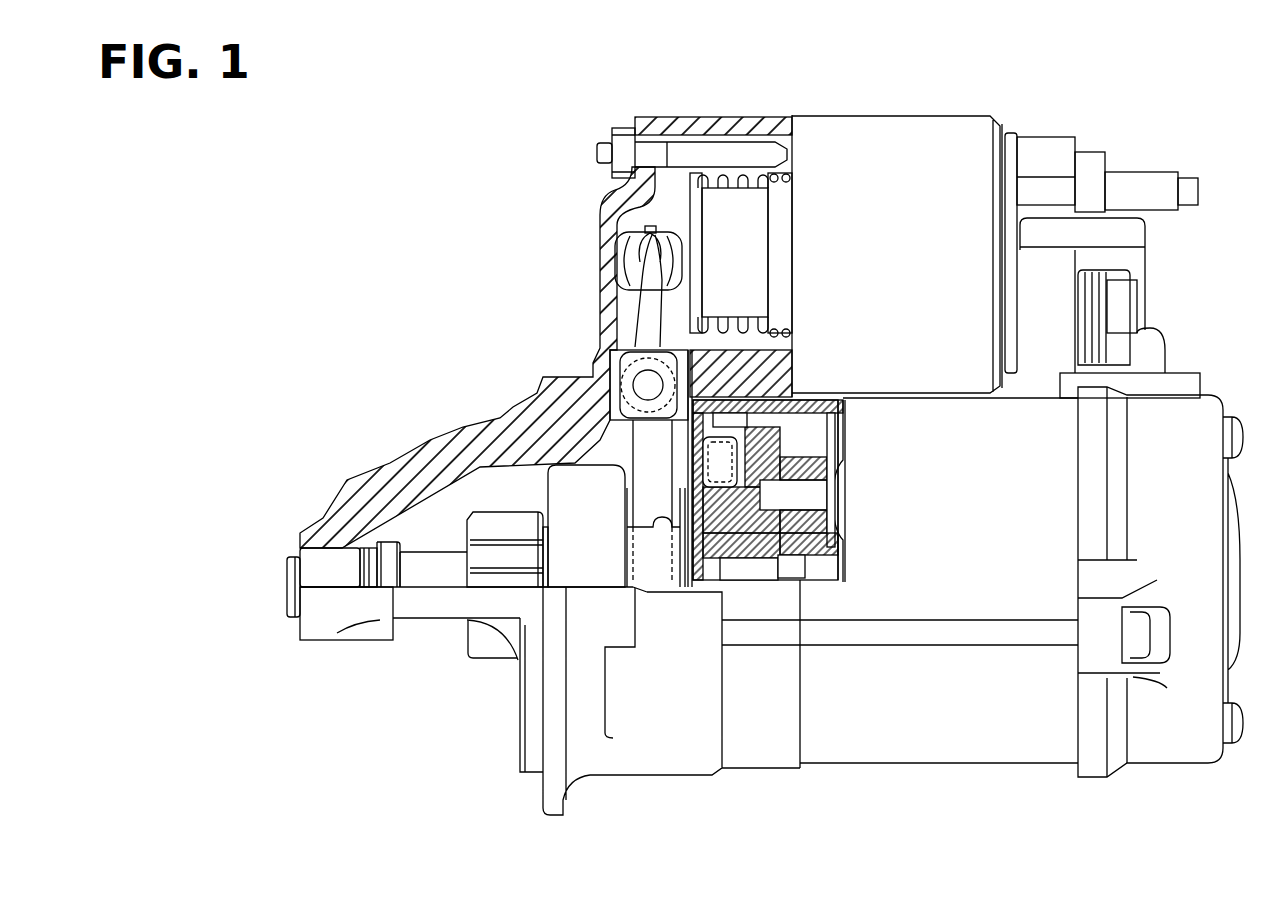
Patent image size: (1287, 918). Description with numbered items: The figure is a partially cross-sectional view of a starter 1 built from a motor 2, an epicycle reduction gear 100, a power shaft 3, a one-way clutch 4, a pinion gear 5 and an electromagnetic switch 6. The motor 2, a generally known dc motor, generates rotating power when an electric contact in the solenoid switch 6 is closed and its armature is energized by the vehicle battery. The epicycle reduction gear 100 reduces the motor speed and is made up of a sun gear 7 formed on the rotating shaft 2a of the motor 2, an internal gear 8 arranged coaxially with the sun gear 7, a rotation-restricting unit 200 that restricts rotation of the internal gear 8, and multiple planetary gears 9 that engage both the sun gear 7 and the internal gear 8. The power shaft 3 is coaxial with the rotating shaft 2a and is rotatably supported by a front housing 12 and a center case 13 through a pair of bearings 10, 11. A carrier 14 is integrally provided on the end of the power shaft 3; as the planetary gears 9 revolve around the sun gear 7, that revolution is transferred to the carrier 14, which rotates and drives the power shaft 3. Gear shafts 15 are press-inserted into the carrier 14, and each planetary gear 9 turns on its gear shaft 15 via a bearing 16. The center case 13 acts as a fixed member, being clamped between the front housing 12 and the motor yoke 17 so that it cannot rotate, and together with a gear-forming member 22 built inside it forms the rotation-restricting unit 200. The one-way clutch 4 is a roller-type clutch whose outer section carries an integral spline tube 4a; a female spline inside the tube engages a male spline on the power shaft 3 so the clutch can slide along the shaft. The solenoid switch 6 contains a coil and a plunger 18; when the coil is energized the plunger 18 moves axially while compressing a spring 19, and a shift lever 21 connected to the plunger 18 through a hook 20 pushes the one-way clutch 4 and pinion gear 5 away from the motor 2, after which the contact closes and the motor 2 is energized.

The starter 1 is at (434, 161).
The motor 2 is at (1022, 775).
The rotating shaft 2a is at (790, 570).
The power shaft 3 is at (432, 558).
The one-way clutch 4 is at (565, 478).
The spline tube 4a is at (647, 577).
The pinion gear 5 is at (497, 520).
The electromagnetic switch 6 is at (964, 111).
The sun gear 7 is at (793, 530).
The internal gear 8 is at (783, 472).
The planetary gears 9 is at (806, 556).
The bearing 10 is at (340, 557).
The bearing 11 is at (700, 577).
The front housing 12 is at (507, 423).
The center case 13 is at (742, 762).
The carrier 14 is at (830, 405).
The gear shaft 15 is at (842, 520).
The bearing 16 is at (826, 562).
The motor yoke 17 is at (970, 753).
The plunger 18 is at (716, 200).
The spring 19 is at (742, 175).
The hook 20 is at (622, 245).
The shift lever 21 is at (645, 300).
The gear-forming member 22 is at (775, 405).
The epicycle reduction gear 100 is at (862, 502).
The rotation-restricting unit 200 is at (880, 556).